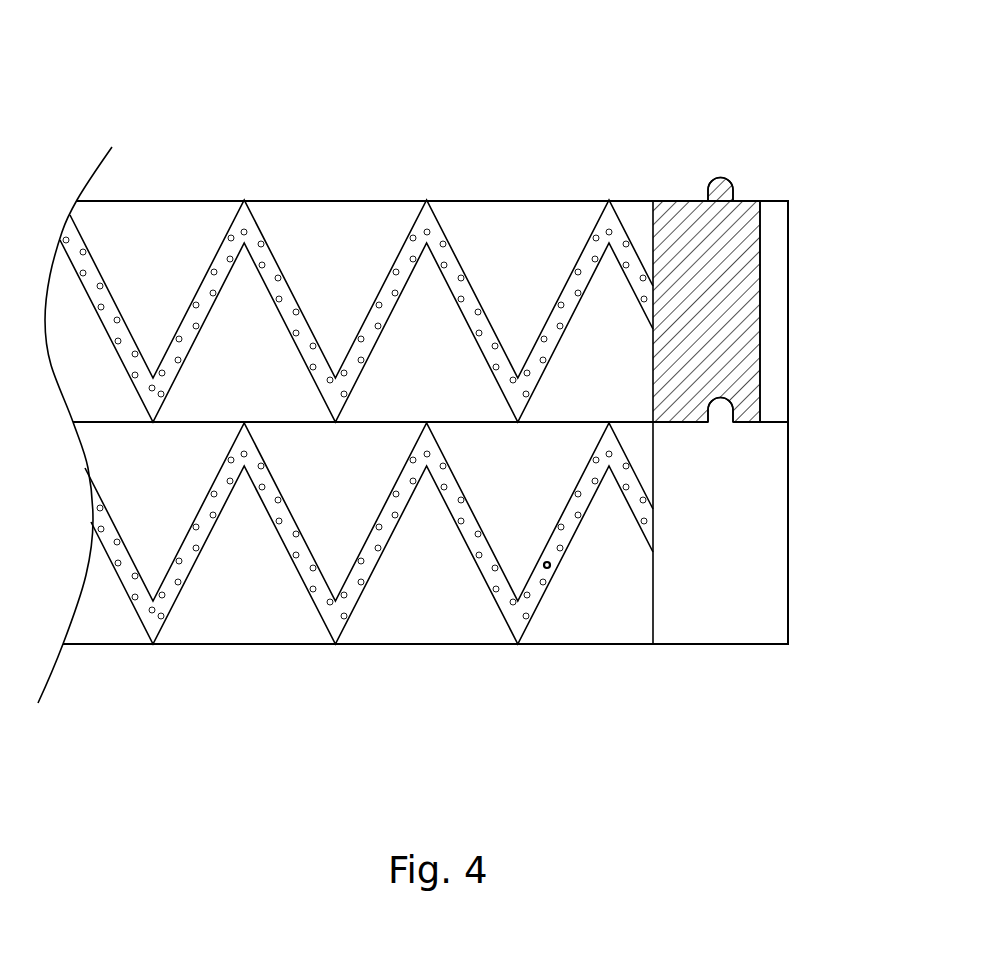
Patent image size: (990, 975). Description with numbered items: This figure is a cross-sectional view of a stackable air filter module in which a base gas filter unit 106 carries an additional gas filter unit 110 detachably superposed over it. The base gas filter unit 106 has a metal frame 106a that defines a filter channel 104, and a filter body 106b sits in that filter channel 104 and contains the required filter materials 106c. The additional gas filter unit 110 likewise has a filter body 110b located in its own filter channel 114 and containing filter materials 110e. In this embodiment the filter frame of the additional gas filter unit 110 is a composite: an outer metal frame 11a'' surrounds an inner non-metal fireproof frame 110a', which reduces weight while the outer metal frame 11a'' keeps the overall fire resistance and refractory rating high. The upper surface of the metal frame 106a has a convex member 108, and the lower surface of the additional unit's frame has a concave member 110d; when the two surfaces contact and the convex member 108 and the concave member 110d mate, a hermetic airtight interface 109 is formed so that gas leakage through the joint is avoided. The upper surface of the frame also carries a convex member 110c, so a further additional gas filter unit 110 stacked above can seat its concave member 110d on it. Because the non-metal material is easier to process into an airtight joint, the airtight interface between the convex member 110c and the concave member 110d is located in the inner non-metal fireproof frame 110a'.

The filter channel 104 is at (456, 690).
The base gas filter unit 106 is at (828, 493).
The metal frame 106a is at (750, 542).
The filter body 106b is at (552, 577).
The filter materials 106c is at (470, 540).
The convex member 108 is at (735, 412).
The airtight interface 109 is at (818, 425).
The additional gas filter unit 110 is at (830, 262).
The inner non-metal fireproof frame 110a' is at (696, 261).
The filter body 110b is at (572, 270).
The convex member 110c is at (722, 177).
The concave member 110d is at (724, 404).
The filter materials 110e is at (412, 243).
The filter channel 114 is at (600, 165).
The end portion 11a'' is at (849, 274).